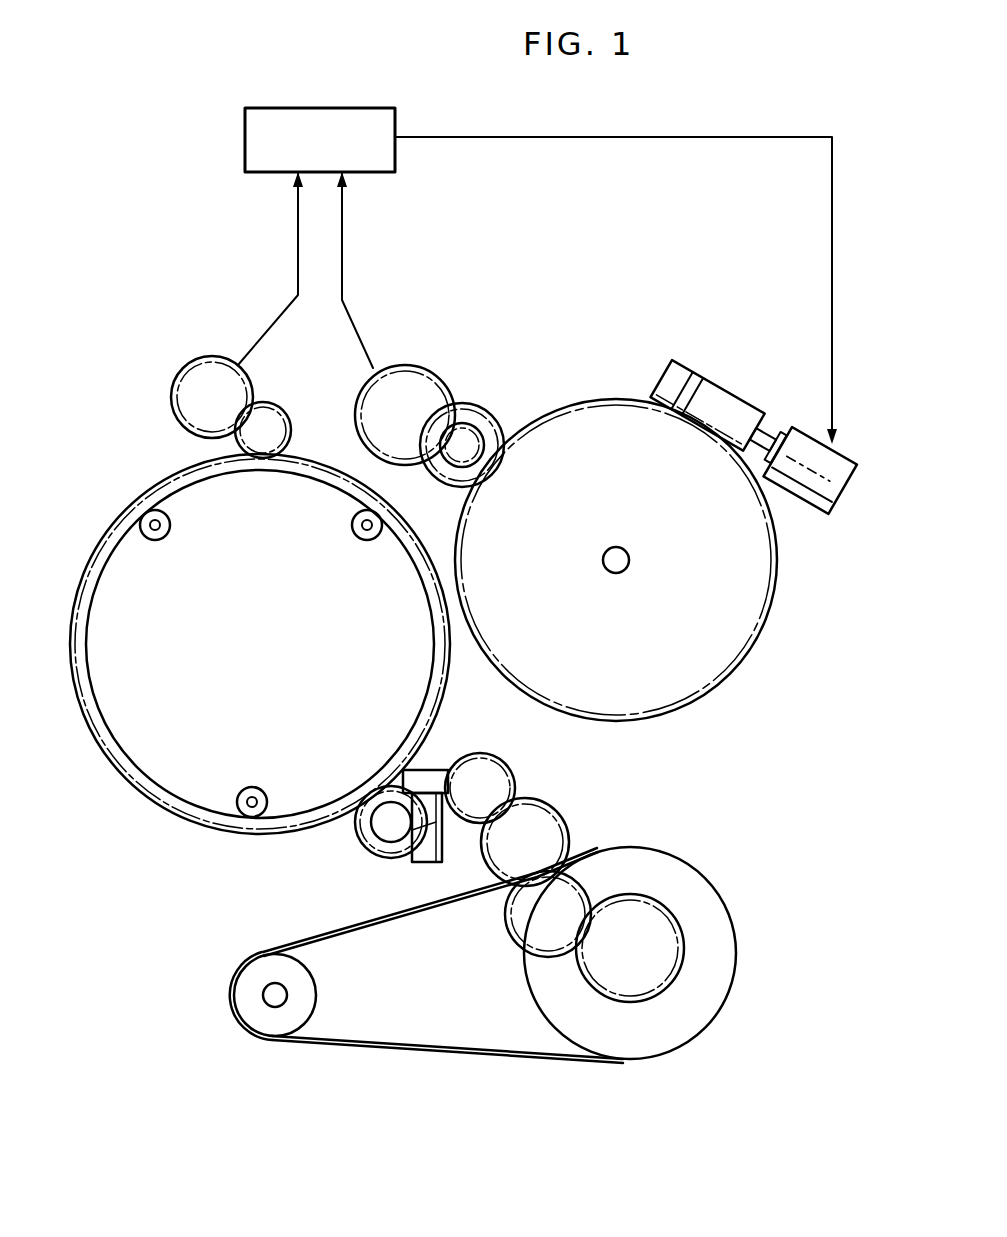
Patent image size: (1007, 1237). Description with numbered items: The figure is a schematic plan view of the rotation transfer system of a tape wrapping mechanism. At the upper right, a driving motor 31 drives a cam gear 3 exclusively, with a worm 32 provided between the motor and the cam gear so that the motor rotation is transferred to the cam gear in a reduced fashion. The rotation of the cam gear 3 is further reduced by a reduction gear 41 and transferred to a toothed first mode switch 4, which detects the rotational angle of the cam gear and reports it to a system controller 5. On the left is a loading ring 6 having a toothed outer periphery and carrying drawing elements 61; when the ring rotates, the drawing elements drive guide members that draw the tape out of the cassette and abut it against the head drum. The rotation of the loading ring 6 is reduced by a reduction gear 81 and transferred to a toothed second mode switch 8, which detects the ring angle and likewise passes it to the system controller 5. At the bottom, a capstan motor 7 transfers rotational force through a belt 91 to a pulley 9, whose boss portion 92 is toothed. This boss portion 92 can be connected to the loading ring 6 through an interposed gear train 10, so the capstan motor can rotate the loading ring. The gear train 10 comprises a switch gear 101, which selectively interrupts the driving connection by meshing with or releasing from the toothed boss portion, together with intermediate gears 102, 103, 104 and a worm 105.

The cam gear 3 is at (583, 392).
The driving motor 31 is at (798, 427).
The worm 32 is at (711, 381).
The first mode switch 4 is at (417, 365).
The reduction gear 41 is at (479, 406).
The system controller 5 is at (383, 108).
The loading ring 6 is at (242, 644).
The drawing elements 61 is at (141, 537).
The capstan motor 7 is at (255, 1030).
The second mode switch 8 is at (217, 356).
The reduction gear 81 is at (276, 404).
The pulley 9 is at (646, 956).
The belt 91 is at (512, 1053).
The boss portion 92 is at (648, 1000).
The gear train 10 is at (495, 836).
The switch gear 101 is at (578, 885).
The intermediate gear 102 is at (566, 828).
The intermediate gear 103 is at (502, 746).
The intermediate gear 104 is at (362, 845).
The worm 105 is at (424, 863).